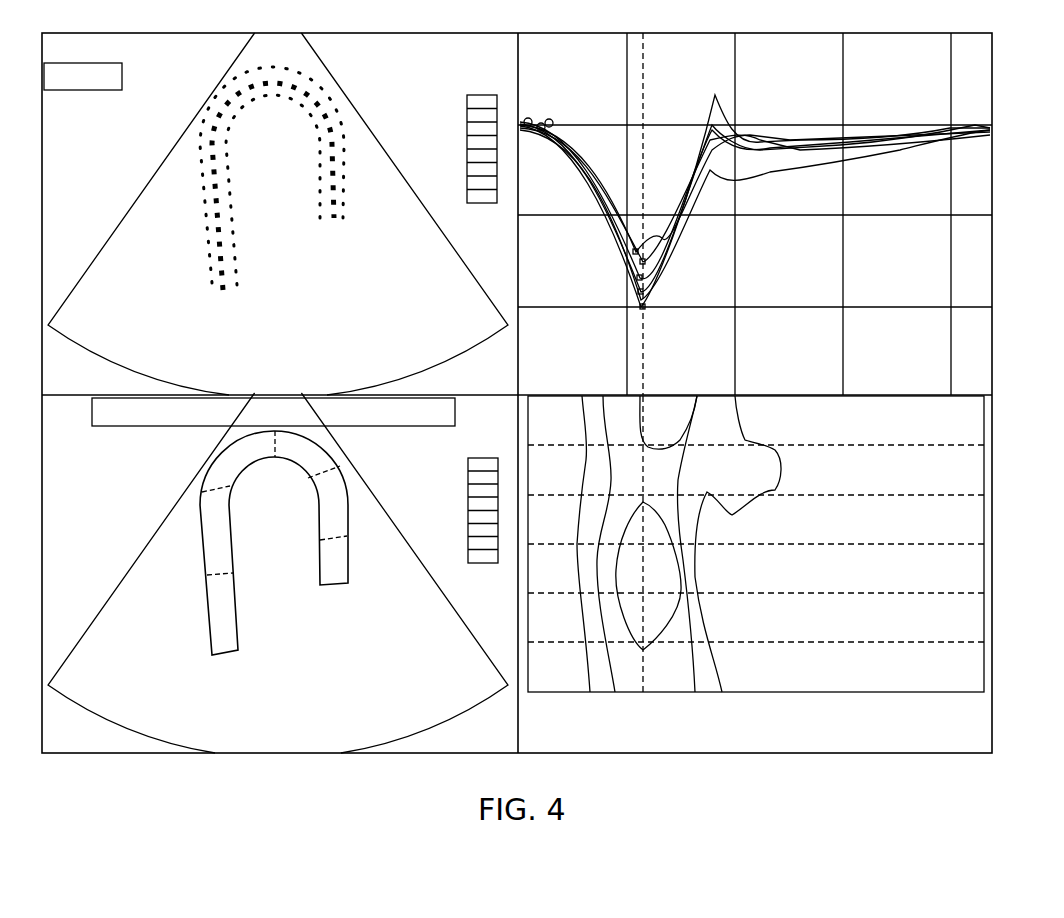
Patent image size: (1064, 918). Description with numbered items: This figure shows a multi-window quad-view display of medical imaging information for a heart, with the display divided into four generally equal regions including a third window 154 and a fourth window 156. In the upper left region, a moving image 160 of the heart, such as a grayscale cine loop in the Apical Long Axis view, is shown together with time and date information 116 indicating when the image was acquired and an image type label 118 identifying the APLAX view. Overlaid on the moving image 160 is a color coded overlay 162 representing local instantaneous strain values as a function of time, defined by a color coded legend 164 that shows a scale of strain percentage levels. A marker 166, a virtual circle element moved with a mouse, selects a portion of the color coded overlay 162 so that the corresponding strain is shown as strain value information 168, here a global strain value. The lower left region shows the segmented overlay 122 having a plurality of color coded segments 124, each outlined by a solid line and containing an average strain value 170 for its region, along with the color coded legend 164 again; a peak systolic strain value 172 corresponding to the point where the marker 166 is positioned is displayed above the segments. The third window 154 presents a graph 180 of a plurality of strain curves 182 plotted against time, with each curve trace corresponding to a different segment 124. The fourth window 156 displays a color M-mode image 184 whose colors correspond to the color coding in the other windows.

The time and date information 116 is at (176, 62).
The image type label 118 is at (80, 92).
The segmented overlay 122 is at (192, 518).
The segments 124 is at (212, 600).
The third window 154 is at (975, 243).
The fourth window 156 is at (978, 545).
The moving image 160 is at (360, 214).
The color coded overlay 162 is at (312, 86).
The color coded legend 164 is at (466, 150).
The marker 166 is at (340, 171).
The strain value information 168 is at (97, 365).
The average strain value 170 is at (330, 462).
The peak systolic strain value 172 is at (162, 435).
The graph 180 is at (752, 330).
The strain curves 182 is at (760, 130).
The color M-mode image 184 is at (978, 648).